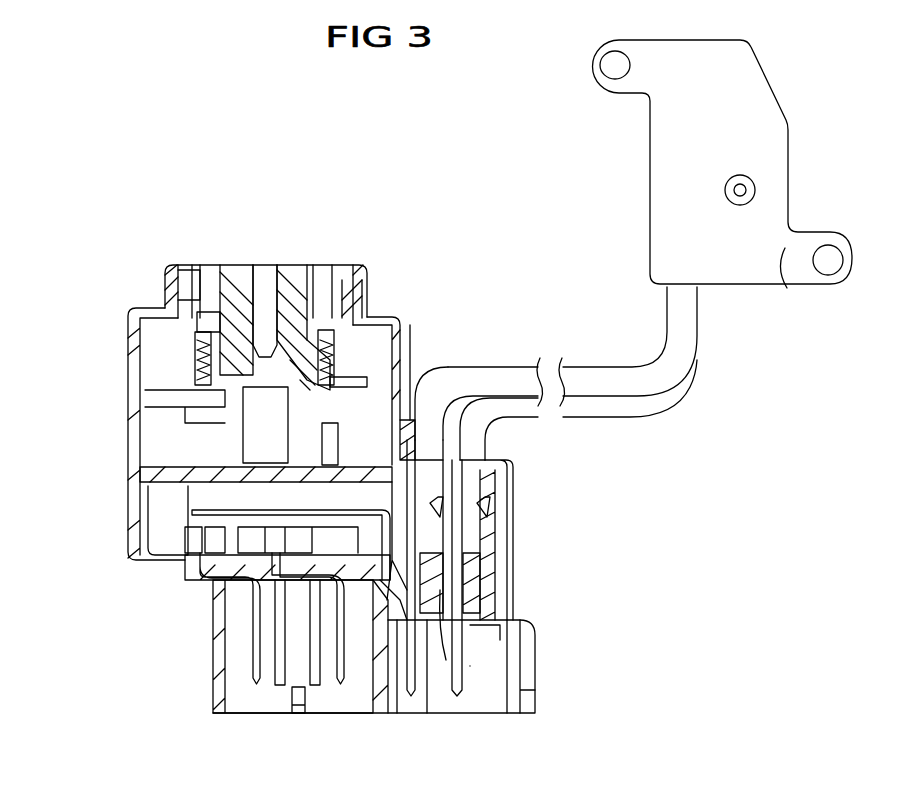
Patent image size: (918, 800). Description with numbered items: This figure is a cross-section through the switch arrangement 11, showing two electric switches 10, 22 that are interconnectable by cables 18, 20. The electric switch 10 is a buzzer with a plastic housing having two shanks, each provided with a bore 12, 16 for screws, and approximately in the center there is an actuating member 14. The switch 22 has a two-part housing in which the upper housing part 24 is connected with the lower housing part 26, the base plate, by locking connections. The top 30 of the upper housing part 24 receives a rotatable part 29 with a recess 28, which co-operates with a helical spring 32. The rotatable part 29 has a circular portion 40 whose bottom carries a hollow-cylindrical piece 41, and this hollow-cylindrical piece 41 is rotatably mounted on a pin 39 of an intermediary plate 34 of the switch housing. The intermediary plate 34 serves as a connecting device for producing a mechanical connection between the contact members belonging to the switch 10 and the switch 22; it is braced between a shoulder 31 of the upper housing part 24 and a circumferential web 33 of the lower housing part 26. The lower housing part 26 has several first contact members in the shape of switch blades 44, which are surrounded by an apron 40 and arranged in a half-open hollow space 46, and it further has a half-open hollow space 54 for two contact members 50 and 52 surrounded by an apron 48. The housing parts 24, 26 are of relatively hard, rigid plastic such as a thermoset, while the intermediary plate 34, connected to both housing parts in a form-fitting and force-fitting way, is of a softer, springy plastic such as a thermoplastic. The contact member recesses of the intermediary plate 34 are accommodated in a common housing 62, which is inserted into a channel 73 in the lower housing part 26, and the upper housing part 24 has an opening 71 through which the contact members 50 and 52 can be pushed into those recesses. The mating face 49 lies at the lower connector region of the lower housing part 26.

The electric switch 10 is at (580, 136).
The pressure sensor 11 is at (245, 122).
The bore 12 is at (604, 64).
The actuating member 14 is at (740, 188).
The bore 16 is at (828, 273).
The cable 18 is at (637, 417).
The cable 20 is at (581, 372).
The switch 22 is at (337, 182).
The upper housing part 24 is at (108, 362).
The lower housing part 26 is at (142, 588).
The recess 28 is at (266, 268).
The rotatable part 29 is at (236, 268).
The top 30 is at (185, 262).
The shoulder 31 is at (405, 460).
The helical spring 32 is at (196, 340).
The circumferential web 33 is at (140, 525).
The intermediary plate 34 is at (118, 478).
The pin 39 is at (240, 452).
The circular portion 40 is at (150, 400).
The hollow-cylindrical piece 41 is at (240, 432).
The switch blades 44 is at (250, 674).
The half-open hollow space 46 is at (230, 635).
The apron 48 is at (526, 655).
The recess 49 is at (480, 625).
The contact member 50 is at (470, 666).
The contact member 52 is at (416, 680).
The half-open hollow space 54 is at (444, 690).
The housing 62 is at (508, 518).
The opening 71 is at (445, 445).
The channel 73 is at (436, 590).